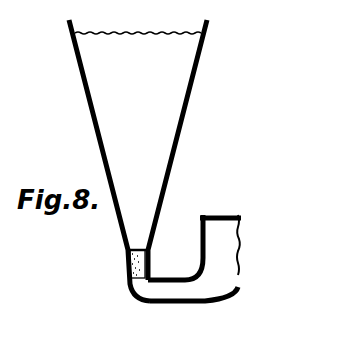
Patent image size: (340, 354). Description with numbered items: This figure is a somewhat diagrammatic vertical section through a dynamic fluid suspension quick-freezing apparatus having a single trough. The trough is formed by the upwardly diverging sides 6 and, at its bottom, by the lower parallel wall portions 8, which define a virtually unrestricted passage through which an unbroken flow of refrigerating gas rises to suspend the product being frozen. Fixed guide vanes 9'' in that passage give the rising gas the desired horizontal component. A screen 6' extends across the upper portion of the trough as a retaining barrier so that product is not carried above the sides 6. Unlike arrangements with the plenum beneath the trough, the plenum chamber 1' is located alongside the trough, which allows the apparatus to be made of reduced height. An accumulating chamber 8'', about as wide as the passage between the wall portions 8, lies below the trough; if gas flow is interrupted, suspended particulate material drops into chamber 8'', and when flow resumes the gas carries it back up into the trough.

The trough sides 6 is at (132, 160).
The screen 6' is at (138, 24).
The plenum chamber 1' is at (194, 243).
The parallel wall portions 8 is at (130, 261).
The fixed guide vanes 9'' is at (107, 240).
The accumulating chamber 8'' is at (123, 302).